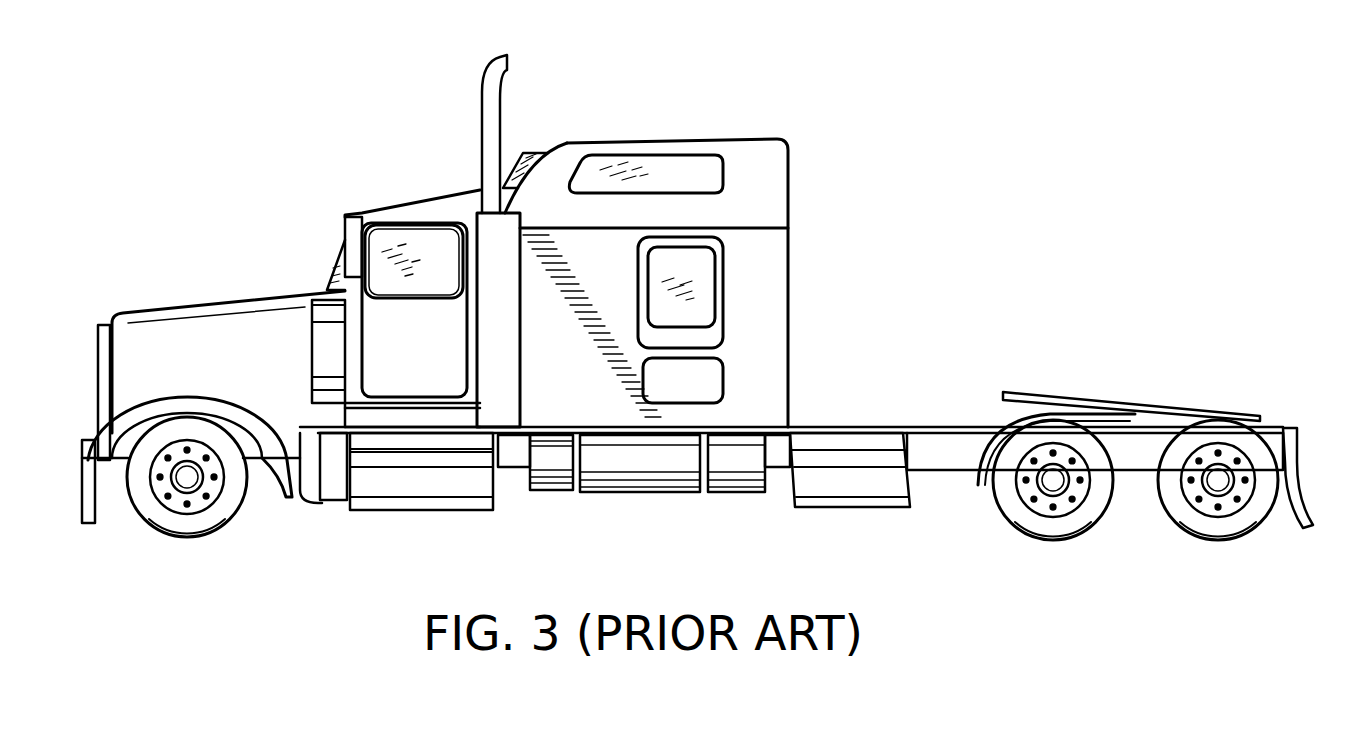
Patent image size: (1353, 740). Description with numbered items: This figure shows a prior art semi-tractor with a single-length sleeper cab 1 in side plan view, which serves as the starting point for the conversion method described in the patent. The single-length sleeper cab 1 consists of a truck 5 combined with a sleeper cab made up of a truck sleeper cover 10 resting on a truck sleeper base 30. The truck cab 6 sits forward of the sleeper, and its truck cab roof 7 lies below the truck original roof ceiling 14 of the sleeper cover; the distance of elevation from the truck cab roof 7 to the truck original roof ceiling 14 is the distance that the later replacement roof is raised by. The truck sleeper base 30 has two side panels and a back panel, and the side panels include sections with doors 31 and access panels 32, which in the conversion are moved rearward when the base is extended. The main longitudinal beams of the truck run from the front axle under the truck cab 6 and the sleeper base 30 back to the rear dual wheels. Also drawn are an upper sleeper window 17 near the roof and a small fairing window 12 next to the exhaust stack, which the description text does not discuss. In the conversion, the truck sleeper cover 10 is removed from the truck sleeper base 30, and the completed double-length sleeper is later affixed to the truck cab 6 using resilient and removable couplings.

The single-length sleeper cab 1 is at (333, 98).
The truck 5 is at (249, 294).
The truck cab 6 is at (467, 204).
The truck cab roof 7 is at (403, 203).
The truck sleeper cover 10 is at (789, 182).
The side fairing window 12 is at (520, 152).
The truck original roof ceiling 14 is at (615, 143).
The sleeper upper window 17 is at (697, 167).
The truck sleeper base 30 is at (786, 252).
The doors 31 is at (753, 290).
The access panels 32 is at (703, 378).